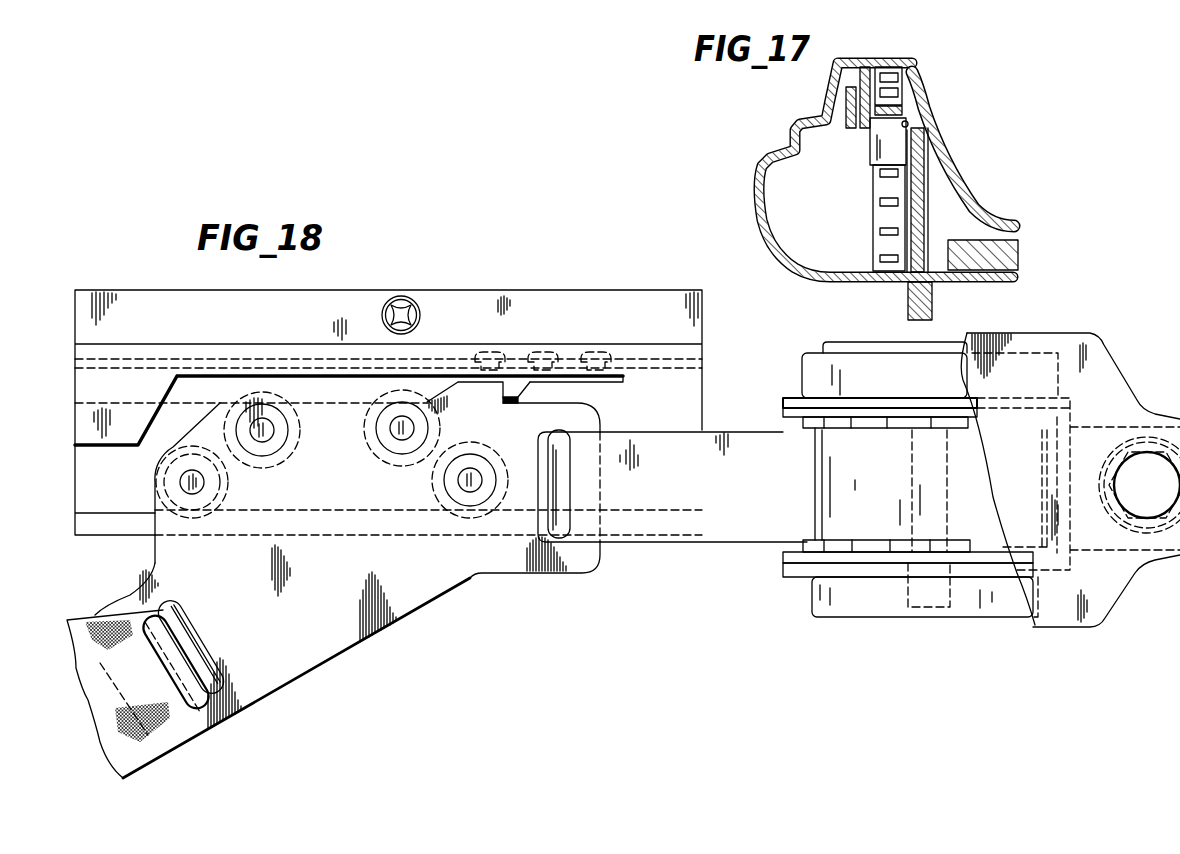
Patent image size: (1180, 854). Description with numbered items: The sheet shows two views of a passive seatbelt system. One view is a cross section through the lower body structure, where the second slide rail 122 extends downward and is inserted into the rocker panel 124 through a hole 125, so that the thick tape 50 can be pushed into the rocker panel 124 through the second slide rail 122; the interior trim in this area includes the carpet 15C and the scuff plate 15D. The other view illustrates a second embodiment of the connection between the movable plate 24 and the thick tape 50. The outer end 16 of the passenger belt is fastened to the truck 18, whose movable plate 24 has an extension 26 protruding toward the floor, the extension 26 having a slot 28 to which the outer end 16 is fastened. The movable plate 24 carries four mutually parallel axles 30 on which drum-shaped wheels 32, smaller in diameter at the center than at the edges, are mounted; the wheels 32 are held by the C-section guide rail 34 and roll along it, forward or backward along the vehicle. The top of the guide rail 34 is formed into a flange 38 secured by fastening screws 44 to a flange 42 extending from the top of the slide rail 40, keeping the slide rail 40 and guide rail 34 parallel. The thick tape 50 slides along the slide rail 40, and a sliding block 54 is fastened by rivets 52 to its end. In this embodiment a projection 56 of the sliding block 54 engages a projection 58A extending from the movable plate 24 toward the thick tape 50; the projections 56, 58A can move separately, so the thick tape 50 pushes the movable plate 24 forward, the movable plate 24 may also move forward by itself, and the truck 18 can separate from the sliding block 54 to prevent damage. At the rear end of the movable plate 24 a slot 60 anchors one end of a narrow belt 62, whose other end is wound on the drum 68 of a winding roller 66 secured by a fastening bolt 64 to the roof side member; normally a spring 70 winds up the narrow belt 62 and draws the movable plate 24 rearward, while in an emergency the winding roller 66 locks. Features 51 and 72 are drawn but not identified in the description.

In FIG. 17, the carpet 15C is at (937, 92).
In FIG. 17, the scuff plate 15D is at (830, 107).
In FIG. 18, the outer end 16 is at (153, 742).
In FIG. 18, the truck 18 is at (362, 648).
In FIG. 18, the movable plate 24 is at (542, 574).
In FIG. 18, the extension 26 is at (297, 673).
In FIG. 18, the slot 28 is at (188, 628).
In FIG. 18, the axles 30 is at (187, 481).
In FIG. 18, the drum-shaped wheels 32 is at (228, 470).
In FIG. 18, the guide rail 34 is at (100, 507).
In FIG. 18, the flange 38 is at (572, 300).
In FIG. 18, the slide rail 40 is at (205, 344).
In FIG. 18, the flange 42 is at (280, 300).
In FIG. 18, the fastening screws 44 is at (413, 298).
In FIG. 17, the thick tape 50 is at (907, 220).
In FIG. 18, the thick tape 50 is at (287, 367).
In FIG. 17, the contact strip 51 is at (885, 178).
In FIG. 18, the rivets 52 is at (545, 350).
In FIG. 18, the sliding block 54 is at (610, 383).
In FIG. 18, the projection 56 is at (513, 398).
In FIG. 18, the projection 58A is at (468, 388).
In FIG. 18, the slot 60 is at (543, 466).
In FIG. 18, the narrow belt 62 is at (668, 543).
In FIG. 18, the fastening bolt 64 is at (1102, 476).
In FIG. 18, the winding roller 66 is at (824, 484).
In FIG. 18, the drum 68 is at (943, 500).
In FIG. 18, the spring 70 is at (918, 618).
In FIG. 18, the housing rib 72 is at (112, 440).
In FIG. 17, the second slide rail 122 is at (872, 153).
In FIG. 17, the rocker panel 124 is at (762, 197).
In FIG. 17, the hole 125 is at (910, 121).